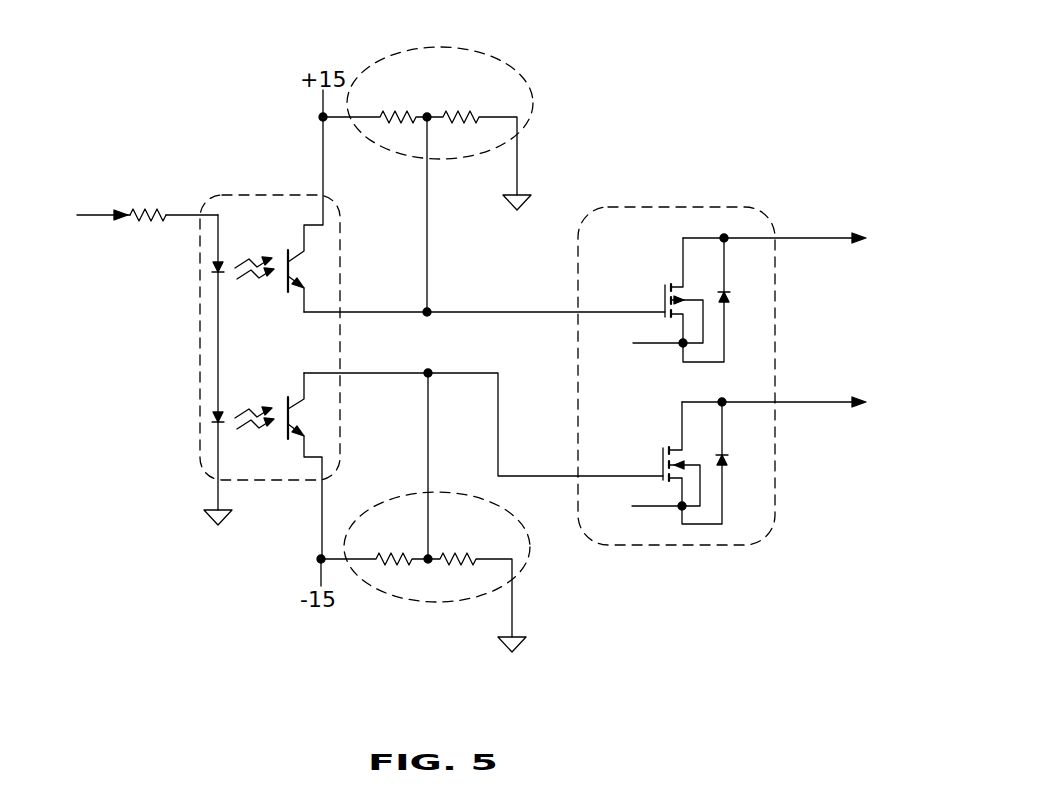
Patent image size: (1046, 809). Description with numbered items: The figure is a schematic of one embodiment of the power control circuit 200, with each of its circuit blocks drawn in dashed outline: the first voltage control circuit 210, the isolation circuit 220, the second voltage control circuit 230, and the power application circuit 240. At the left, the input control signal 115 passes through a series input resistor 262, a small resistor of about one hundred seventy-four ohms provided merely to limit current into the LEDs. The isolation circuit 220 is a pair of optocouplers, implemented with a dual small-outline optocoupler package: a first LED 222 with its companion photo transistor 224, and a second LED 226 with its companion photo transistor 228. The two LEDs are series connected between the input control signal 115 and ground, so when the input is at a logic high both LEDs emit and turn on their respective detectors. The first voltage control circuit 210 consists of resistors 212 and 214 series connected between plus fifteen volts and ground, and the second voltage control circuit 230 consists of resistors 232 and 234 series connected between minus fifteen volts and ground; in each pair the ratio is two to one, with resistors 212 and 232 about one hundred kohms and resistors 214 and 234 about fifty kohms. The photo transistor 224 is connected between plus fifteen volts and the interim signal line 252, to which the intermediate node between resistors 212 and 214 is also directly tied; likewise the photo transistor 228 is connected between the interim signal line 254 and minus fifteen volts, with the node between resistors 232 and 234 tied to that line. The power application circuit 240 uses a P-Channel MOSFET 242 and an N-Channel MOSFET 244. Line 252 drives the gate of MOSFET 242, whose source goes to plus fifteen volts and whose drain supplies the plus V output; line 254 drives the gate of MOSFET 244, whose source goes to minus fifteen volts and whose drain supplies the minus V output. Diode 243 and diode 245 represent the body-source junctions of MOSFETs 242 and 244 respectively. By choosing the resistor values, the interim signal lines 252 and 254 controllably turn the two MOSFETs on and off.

The switching circuit 200 is at (663, 51).
The input control signal 115 is at (83, 213).
The input resistor 262 is at (150, 210).
The first voltage control circuit 210 is at (463, 46).
The resistor 212 is at (397, 113).
The resistor 214 is at (462, 113).
The isolation circuit 220 is at (281, 195).
The first LED 222 is at (223, 274).
The photo transistor 224 is at (287, 249).
The second LED 226 is at (221, 424).
The photo transistor 228 is at (287, 402).
The second voltage control circuit 230 is at (425, 602).
The resistor 232 is at (394, 553).
The resistor 234 is at (460, 553).
The power application circuit 240 is at (712, 207).
The P-Channel MOSFET 242 is at (680, 286).
The diode 243 is at (725, 301).
The N-Channel MOSFET 244 is at (677, 447).
The diode 245 is at (724, 463).
The interim signal line 252 is at (473, 310).
The interim signal line 254 is at (465, 372).